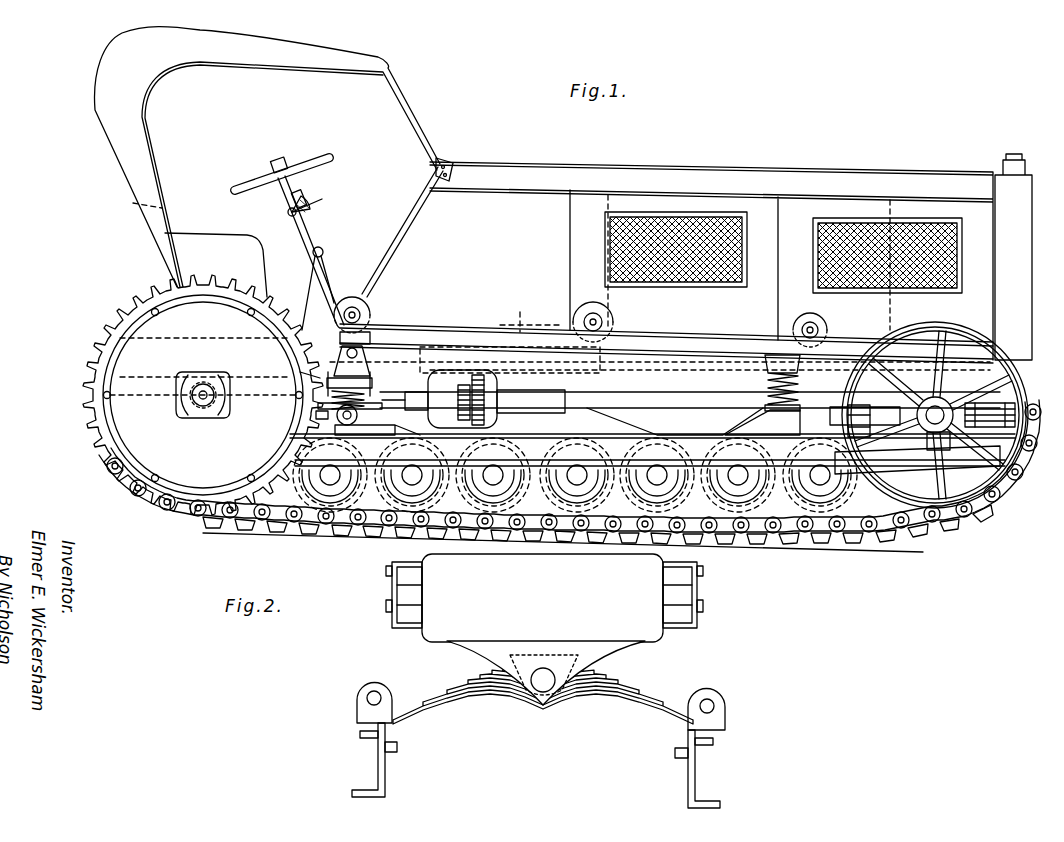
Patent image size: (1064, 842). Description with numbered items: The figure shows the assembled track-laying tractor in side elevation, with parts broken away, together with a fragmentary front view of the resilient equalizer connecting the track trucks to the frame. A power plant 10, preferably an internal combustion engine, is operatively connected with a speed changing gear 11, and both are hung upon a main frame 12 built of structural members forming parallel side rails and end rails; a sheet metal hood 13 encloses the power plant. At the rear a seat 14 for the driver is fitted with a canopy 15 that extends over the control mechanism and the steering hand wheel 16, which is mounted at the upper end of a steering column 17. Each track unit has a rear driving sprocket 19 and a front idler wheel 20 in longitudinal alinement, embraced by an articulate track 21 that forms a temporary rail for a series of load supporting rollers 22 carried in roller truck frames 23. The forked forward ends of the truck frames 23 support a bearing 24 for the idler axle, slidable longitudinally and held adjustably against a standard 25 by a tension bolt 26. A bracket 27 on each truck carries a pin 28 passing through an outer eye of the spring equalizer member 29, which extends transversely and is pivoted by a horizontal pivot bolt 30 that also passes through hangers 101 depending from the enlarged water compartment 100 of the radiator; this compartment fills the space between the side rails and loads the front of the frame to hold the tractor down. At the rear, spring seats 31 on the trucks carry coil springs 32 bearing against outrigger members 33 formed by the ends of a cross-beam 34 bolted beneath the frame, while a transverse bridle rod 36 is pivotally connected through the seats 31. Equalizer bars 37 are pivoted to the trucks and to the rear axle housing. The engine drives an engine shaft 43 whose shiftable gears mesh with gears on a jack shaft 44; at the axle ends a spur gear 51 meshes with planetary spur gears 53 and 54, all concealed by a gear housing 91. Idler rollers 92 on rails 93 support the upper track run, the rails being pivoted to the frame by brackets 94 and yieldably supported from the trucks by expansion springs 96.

In FIG. 1, the power plant 10 is at (731, 257).
In FIG. 1, the speed changing gear 11 is at (530, 313).
In FIG. 1, the main frame 12 is at (652, 414).
In FIG. 2, the main frame 12 is at (392, 590).
In FIG. 1, the sheet metal hood 13 is at (543, 260).
In FIG. 1, the seat 14 is at (216, 265).
In FIG. 1, the canopy 15 is at (274, 162).
In FIG. 1, the steering hand wheel 16 is at (287, 234).
In FIG. 1, the steering column 17 is at (302, 263).
In FIG. 1, the rear driving sprocket 19 is at (228, 298).
In FIG. 1, the front idler wheel 20 is at (852, 410).
In FIG. 1, the articulate track 21 is at (205, 522).
In FIG. 1, the load supporting rollers 22 is at (575, 475).
In FIG. 1, the roller truck frames 23 is at (588, 437).
In FIG. 2, the roller truck frames 23 is at (378, 763).
In FIG. 1, the bearing 24 is at (947, 403).
In FIG. 1, the standard 25 is at (762, 423).
In FIG. 1, the tension bolt 26 is at (1026, 400).
In FIG. 1, the bracket 27 is at (917, 460).
In FIG. 2, the bracket 27 is at (357, 702).
In FIG. 2, the pin 28 is at (375, 691).
In FIG. 2, the spring equalizer member 29 is at (497, 703).
In FIG. 2, the pivot bolt 30 is at (542, 692).
In FIG. 1, the spring seats 31 is at (360, 406).
In FIG. 1, the coil springs 32 is at (330, 402).
In FIG. 1, the outrigger members 33 is at (372, 383).
In FIG. 1, the cross-beam 34 is at (295, 372).
In FIG. 1, the transverse bridle rod 36 is at (352, 424).
In FIG. 1, the equalizer bars 37 is at (318, 418).
In FIG. 1, the engine shaft 43 is at (550, 366).
In FIG. 1, the jack shaft 44 is at (485, 405).
In FIG. 1, the spur gear 51 is at (203, 408).
In FIG. 1, the planetary spur gear 53 is at (216, 394).
In FIG. 1, the planetary spur gear 54 is at (194, 394).
In FIG. 1, the gear housing 91 is at (203, 395).
In FIG. 1, the idler rollers 92 is at (352, 308).
In FIG. 1, the rails 93 is at (666, 338).
In FIG. 1, the brackets 94 is at (364, 360).
In FIG. 1, the expansion springs 96 is at (356, 344).
In FIG. 2, the water compartment 100 is at (542, 598).
In FIG. 2, the hangers 101 is at (556, 702).